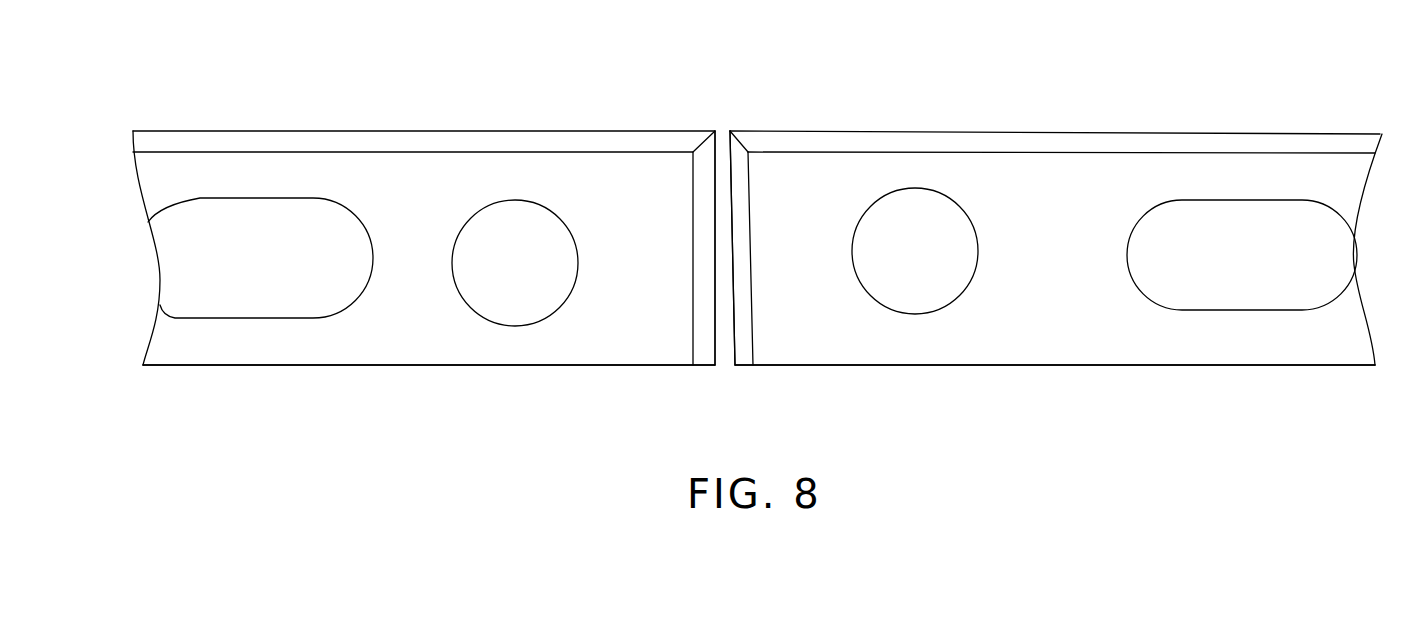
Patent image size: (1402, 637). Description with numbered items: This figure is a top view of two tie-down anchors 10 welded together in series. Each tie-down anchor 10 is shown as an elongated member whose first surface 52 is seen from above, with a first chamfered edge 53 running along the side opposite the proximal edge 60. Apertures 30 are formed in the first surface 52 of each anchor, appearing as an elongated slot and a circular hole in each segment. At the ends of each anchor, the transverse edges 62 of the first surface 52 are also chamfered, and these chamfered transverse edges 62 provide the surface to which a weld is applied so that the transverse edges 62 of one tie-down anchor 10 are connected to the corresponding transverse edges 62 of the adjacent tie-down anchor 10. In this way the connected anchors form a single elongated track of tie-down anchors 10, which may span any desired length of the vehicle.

The tie-down anchor 10 is at (740, 226).
The apertures (slot and circular holes) 30 is at (357, 270).
The first surface 52 is at (757, 248).
The first chamfered edge 53 is at (565, 138).
The proximal edge 60 is at (447, 367).
The transverse edges 62 is at (703, 367).